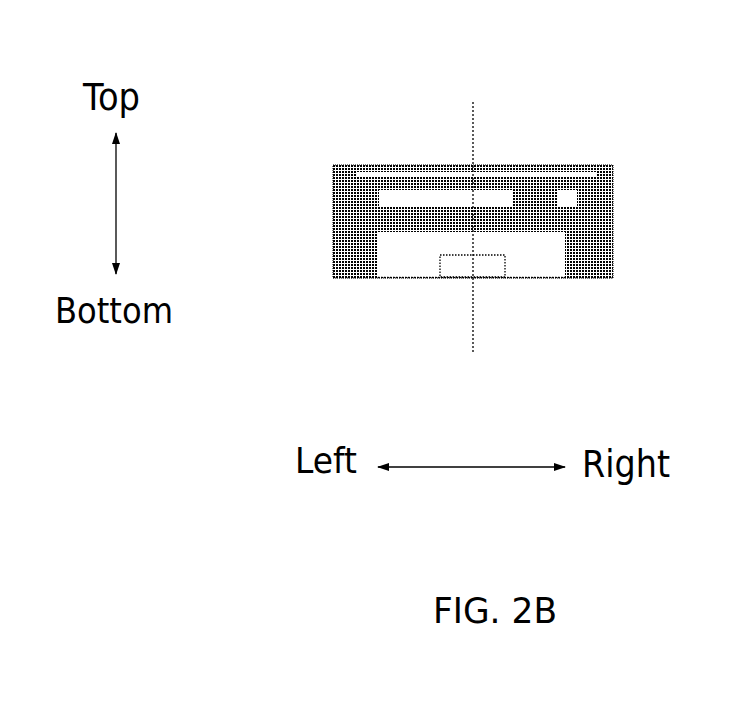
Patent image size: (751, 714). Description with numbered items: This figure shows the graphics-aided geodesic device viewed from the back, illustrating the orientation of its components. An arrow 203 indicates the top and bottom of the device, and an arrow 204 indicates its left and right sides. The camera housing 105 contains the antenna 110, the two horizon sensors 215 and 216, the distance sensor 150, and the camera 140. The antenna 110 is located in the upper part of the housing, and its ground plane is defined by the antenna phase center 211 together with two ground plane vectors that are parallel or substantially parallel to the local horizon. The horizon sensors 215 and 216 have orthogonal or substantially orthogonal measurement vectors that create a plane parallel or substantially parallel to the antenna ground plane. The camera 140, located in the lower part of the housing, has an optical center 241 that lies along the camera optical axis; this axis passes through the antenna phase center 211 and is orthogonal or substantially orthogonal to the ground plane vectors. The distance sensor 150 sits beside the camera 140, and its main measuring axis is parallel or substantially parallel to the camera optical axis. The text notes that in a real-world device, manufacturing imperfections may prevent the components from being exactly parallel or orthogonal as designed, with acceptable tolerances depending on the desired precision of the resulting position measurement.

The camera housing 105 is at (350, 222).
The antenna 110 is at (403, 171).
The antenna phase center 211 is at (473, 165).
The horizon sensor 216 is at (502, 198).
The horizon sensor 215 is at (565, 200).
The distance sensor 150 is at (533, 250).
The camera 140 is at (457, 266).
The optical center 241 is at (473, 279).
The arrow 203 is at (92, 203).
The arrow 204 is at (471, 453).